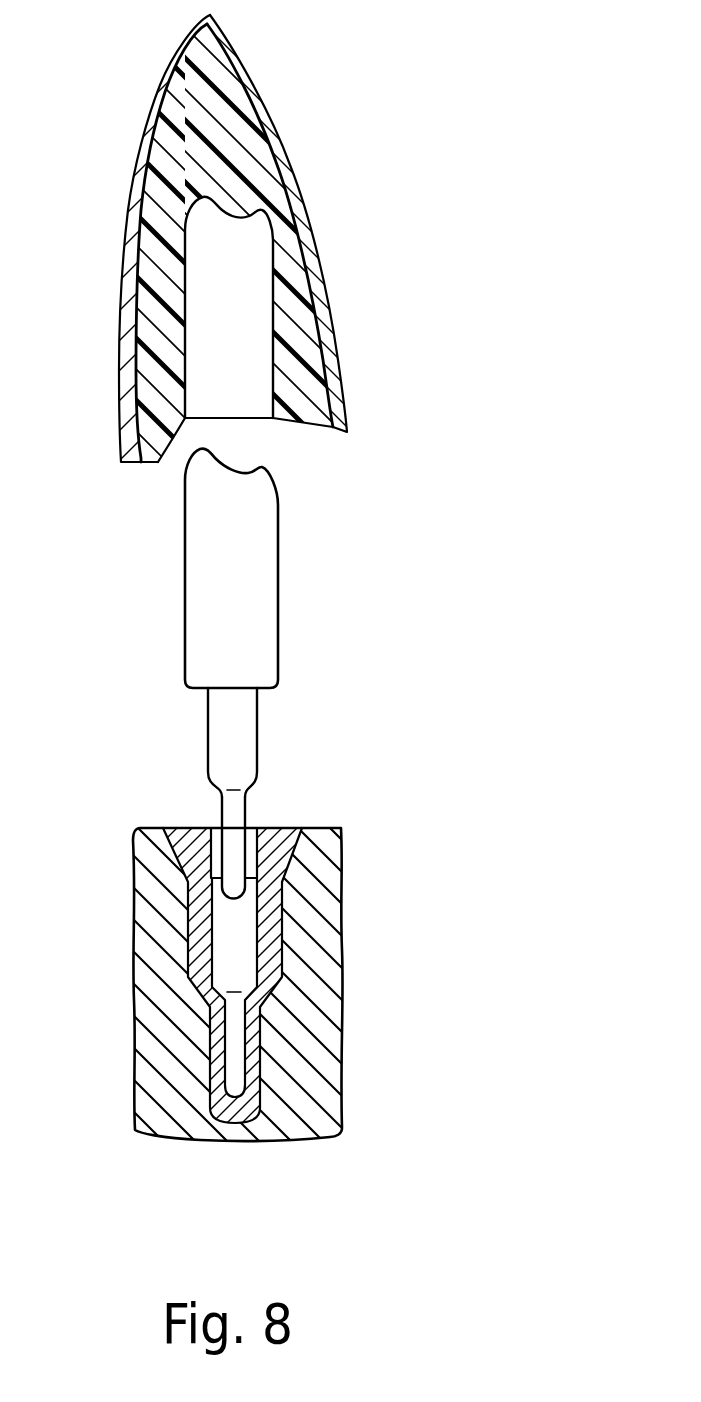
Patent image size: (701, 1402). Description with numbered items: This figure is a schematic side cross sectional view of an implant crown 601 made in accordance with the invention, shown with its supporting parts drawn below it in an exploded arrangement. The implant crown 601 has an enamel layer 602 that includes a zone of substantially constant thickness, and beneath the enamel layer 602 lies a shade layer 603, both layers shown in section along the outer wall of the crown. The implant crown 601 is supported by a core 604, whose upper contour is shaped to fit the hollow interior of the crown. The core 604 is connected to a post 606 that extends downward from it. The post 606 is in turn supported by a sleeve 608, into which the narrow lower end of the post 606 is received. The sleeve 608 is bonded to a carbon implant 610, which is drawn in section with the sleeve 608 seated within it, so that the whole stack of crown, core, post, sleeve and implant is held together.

The implant crown 601 is at (280, 137).
The enamel layer 602 is at (250, 80).
The shade layer 603 is at (257, 170).
The core 604 is at (260, 578).
The post 606 is at (247, 737).
The sleeve 608 is at (252, 878).
The carbon implant 610 is at (310, 927).